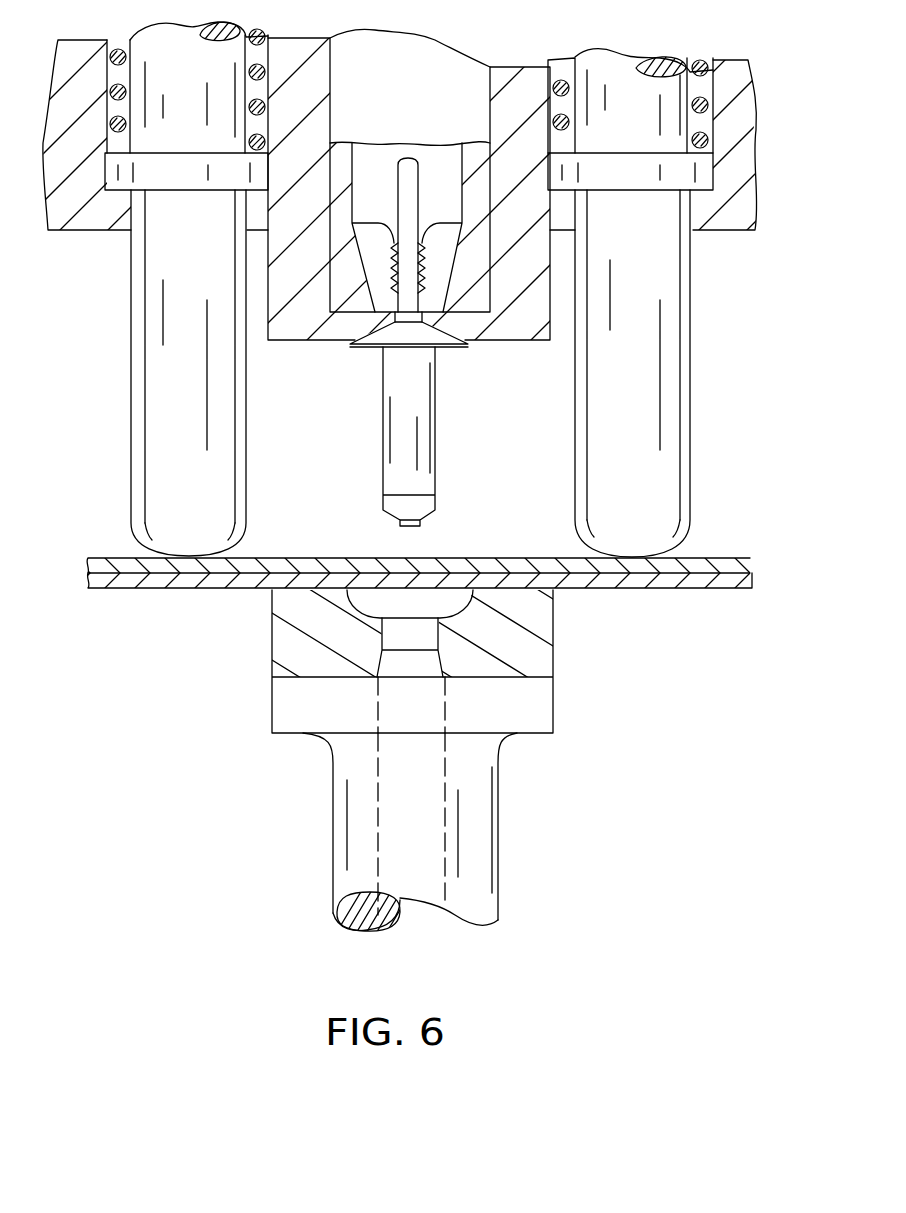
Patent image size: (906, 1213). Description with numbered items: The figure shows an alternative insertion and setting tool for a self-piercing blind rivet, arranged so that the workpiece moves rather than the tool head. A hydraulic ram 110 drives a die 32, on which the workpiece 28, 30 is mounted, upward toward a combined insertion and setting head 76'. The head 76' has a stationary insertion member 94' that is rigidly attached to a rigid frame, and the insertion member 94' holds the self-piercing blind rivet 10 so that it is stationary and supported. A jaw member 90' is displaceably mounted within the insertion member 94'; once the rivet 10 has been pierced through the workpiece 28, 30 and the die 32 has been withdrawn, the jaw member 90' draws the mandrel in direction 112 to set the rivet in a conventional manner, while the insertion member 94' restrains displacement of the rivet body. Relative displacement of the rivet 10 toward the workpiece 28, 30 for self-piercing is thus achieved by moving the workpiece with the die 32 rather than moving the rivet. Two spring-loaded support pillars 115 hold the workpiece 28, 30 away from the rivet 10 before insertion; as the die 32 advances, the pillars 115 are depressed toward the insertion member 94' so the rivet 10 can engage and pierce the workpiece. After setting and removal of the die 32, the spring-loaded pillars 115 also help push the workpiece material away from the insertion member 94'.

The combined insertion and setting head 76' is at (453, 195).
The stationary insertion member 94' is at (430, 184).
The jaw member 90' is at (229, 258).
The spring-loaded support pillars 115 is at (168, 410).
The direction 112 is at (438, 130).
The self-piercing blind rivet 10 is at (380, 468).
The workpiece 30 is at (712, 567).
The workpiece 28 is at (680, 578).
The die 32 is at (287, 635).
The hydraulic ram 110 is at (340, 815).